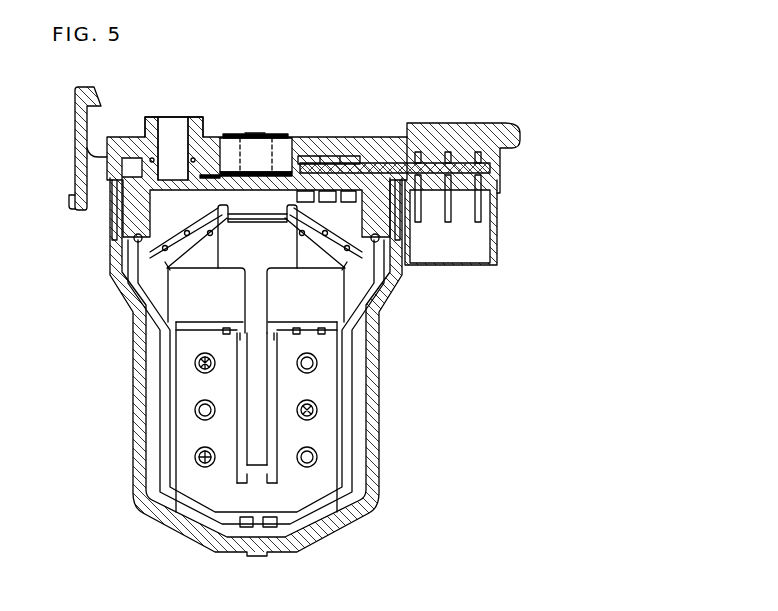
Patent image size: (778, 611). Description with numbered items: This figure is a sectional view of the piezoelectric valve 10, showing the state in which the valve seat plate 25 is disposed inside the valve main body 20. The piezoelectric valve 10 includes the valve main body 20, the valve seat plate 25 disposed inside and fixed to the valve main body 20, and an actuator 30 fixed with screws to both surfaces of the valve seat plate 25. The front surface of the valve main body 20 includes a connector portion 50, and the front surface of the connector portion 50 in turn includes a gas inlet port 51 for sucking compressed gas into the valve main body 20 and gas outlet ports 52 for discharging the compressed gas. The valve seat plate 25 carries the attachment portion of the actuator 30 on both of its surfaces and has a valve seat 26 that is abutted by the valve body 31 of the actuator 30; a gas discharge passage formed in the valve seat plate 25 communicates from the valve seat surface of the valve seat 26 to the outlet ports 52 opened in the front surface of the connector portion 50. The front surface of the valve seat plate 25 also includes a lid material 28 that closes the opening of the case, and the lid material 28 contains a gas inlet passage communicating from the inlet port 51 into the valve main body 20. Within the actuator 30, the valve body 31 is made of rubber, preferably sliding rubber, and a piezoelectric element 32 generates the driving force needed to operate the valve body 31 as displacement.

The piezoelectric valve 10 is at (493, 92).
The valve main body 20 is at (140, 458).
The valve seat plate 25 is at (348, 417).
The valve seat 26 is at (270, 207).
The lid material 28 is at (330, 183).
The actuator 30 is at (190, 383).
The valve body 31 is at (248, 217).
The piezoelectric element 32 is at (262, 395).
The connector portion 50 is at (375, 143).
The gas inlet port 51 is at (170, 114).
The gas outlet ports 52 is at (261, 134).